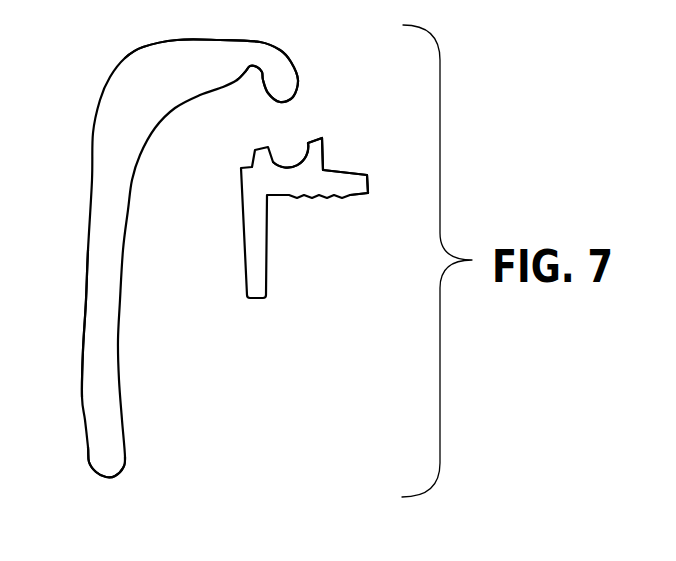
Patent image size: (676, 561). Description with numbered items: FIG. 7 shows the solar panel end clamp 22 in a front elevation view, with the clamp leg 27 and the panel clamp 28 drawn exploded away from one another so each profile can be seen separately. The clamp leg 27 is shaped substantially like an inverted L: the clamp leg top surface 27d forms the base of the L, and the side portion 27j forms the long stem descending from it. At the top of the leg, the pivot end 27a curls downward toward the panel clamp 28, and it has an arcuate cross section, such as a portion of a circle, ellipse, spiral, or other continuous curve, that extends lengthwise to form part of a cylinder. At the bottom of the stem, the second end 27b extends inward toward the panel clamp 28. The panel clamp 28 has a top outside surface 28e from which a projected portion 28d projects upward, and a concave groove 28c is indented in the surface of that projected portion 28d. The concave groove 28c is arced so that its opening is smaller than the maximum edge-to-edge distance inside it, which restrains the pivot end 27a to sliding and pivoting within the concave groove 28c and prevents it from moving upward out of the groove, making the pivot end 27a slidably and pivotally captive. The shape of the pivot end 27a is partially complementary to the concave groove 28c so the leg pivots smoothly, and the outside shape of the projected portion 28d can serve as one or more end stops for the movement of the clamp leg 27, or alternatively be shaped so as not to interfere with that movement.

The assembly 22 is at (286, 385).
The clamp leg 27 is at (86, 172).
The pivot end 27a is at (298, 81).
The second end 27b is at (88, 448).
The clamp leg top surface 27d is at (167, 42).
The side portion 27j is at (85, 350).
The panel clamp 28 is at (230, 232).
The concave groove 28c is at (275, 160).
The projected portion 28d is at (325, 168).
The top outside surface 28e is at (355, 175).